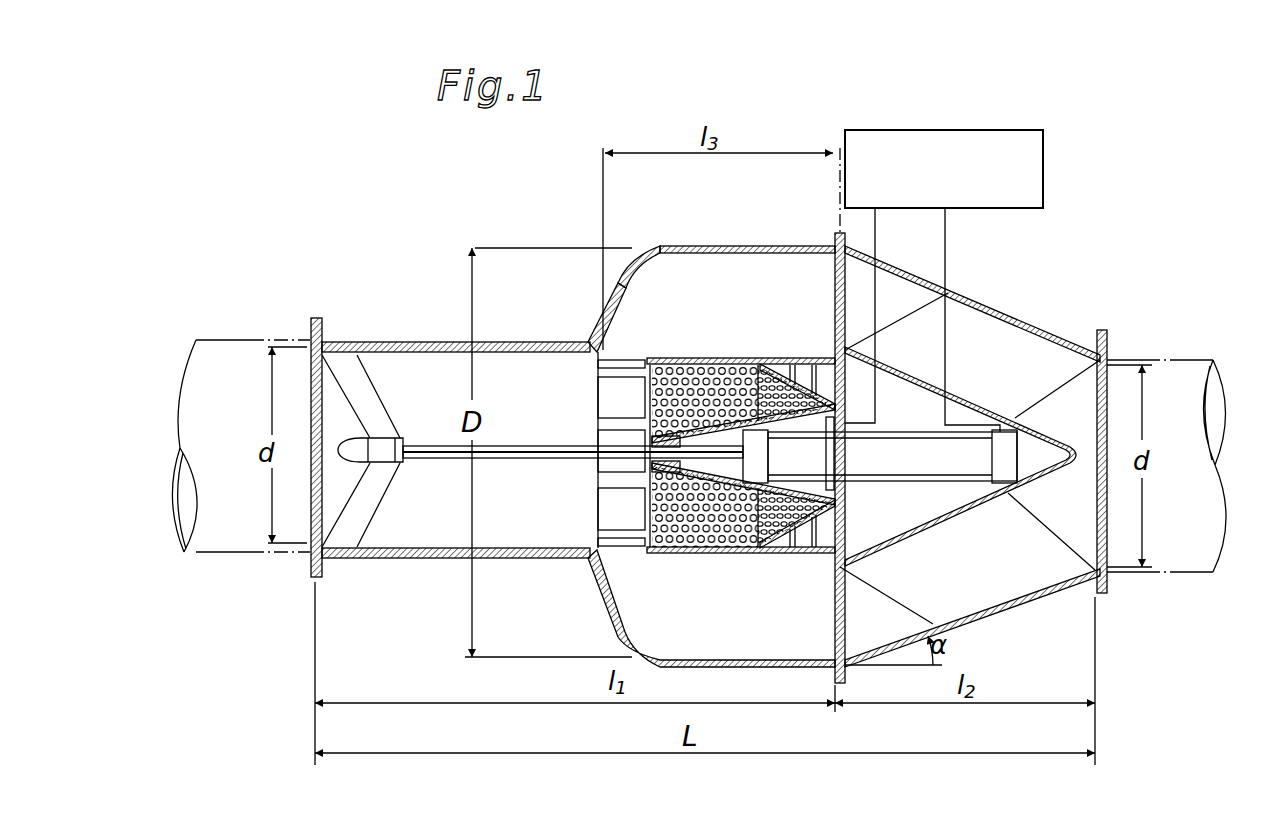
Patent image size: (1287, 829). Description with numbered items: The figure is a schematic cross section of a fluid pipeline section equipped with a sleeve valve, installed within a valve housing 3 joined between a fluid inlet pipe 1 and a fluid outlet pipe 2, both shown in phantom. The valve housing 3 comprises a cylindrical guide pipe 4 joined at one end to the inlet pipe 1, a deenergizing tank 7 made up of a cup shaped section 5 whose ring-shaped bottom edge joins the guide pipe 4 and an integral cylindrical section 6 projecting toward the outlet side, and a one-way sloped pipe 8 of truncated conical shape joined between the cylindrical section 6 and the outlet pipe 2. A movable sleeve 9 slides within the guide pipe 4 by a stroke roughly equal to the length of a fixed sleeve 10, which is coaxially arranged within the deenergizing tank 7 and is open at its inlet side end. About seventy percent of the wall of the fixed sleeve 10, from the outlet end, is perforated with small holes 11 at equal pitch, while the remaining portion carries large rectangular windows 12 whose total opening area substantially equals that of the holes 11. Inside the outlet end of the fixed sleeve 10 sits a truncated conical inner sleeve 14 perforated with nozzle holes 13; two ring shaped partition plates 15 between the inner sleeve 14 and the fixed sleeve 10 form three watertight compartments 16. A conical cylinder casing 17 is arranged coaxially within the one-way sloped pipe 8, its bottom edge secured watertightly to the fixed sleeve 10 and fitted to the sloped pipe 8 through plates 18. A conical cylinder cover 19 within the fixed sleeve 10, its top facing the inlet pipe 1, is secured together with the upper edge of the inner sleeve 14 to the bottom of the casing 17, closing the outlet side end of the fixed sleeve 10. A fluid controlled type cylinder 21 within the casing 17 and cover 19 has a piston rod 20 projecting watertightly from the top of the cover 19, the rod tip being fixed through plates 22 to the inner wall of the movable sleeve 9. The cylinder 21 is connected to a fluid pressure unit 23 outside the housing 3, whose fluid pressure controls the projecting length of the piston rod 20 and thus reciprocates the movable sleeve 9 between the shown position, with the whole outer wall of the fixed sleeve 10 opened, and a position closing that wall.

The fluid inlet pipe 1 is at (238, 357).
The fluid outlet pipe 2 is at (1178, 365).
The valve housing 3 is at (588, 322).
The guide pipe 4 is at (396, 343).
The cup shaped section 5 is at (613, 281).
The cylindrical section 6 is at (716, 247).
The deenergizing tank 7 is at (656, 245).
The one-way sloped pipe 8 is at (997, 312).
The movable sleeve 9 is at (455, 343).
The fixed sleeve 10 is at (653, 358).
The small holes 11 is at (698, 358).
The large windows 12 is at (623, 358).
The nozzle holes 13 is at (788, 358).
The inner sleeve 14 is at (735, 487).
The ring shaped partition plates 15 is at (785, 535).
The watertight compartments 16 is at (792, 557).
The cylinder casing 17 is at (985, 508).
The plates 18 is at (1035, 350).
The cylinder cover 19 is at (650, 540).
The piston rod 20 is at (527, 458).
The fluid controlled type cylinder 21 is at (887, 481).
The plates 22 is at (345, 365).
The fluid pressure unit 23 is at (1043, 171).